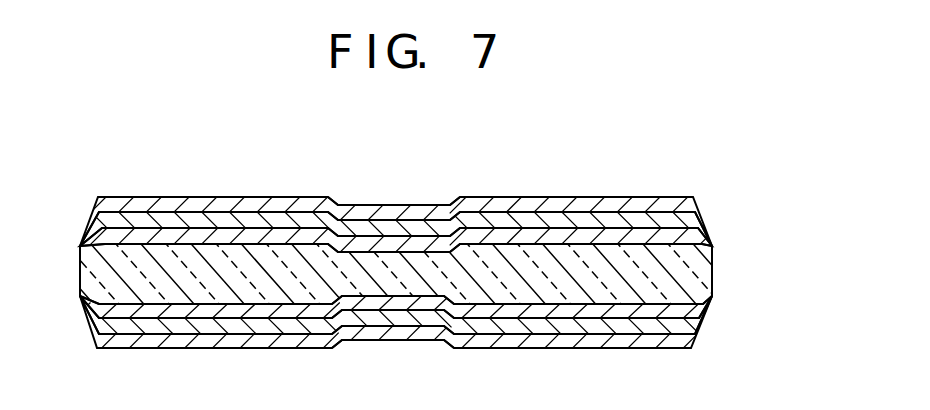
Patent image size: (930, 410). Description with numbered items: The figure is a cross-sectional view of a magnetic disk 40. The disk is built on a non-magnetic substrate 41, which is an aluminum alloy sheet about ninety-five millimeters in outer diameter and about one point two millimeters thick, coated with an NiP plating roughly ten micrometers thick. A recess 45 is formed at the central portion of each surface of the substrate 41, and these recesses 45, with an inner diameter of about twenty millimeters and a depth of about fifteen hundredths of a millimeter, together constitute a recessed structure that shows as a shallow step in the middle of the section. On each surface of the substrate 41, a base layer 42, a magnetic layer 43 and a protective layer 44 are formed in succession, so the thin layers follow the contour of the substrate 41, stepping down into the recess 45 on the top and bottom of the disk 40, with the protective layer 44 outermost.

The magnetic disk 40 is at (74, 220).
The non-magnetic substrate 41 is at (700, 267).
The base layer 42 is at (690, 235).
The magnetic layer 43 is at (695, 212).
The protective layer 44 is at (693, 199).
The recess 45 is at (418, 203).